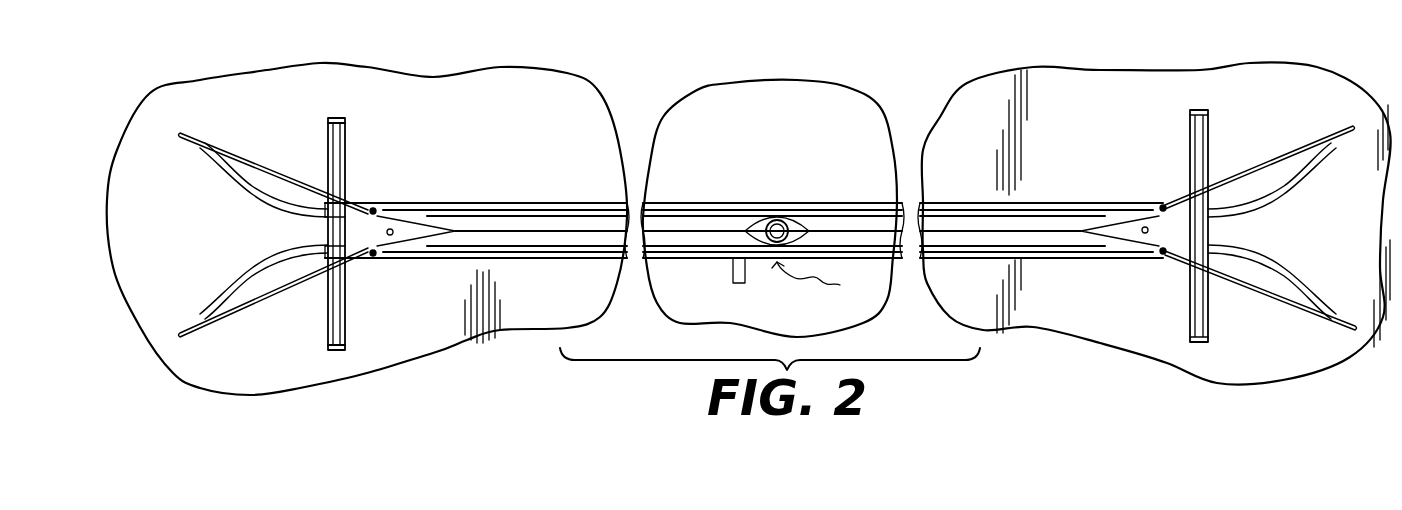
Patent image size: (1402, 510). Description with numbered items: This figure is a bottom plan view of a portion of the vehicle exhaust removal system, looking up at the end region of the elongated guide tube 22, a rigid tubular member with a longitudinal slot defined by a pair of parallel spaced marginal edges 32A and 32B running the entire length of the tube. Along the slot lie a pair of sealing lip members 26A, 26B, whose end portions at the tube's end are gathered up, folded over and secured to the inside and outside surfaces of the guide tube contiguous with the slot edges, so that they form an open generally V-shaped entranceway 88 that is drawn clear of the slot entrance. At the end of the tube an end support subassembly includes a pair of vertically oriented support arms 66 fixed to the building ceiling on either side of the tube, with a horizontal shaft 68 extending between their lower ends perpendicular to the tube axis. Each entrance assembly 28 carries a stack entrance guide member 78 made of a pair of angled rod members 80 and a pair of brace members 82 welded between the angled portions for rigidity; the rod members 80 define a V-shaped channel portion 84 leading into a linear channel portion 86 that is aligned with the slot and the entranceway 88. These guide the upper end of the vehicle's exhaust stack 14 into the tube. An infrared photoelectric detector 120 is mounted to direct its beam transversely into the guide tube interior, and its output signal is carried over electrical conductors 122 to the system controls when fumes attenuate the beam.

The exhaust stack 14 is at (781, 220).
The guide tube 22 is at (471, 204).
The sealing lip member 26A is at (533, 241).
The sealing lip member 26B is at (530, 220).
The entrance assembly 28 is at (302, 233).
The marginal edge 32A is at (658, 259).
The marginal edge 32B is at (691, 206).
The support arm 66 is at (340, 118).
The horizontal shaft 68 is at (340, 305).
The stack entrance guide member 78 is at (302, 207).
The angled rod member 80 is at (193, 152).
The brace member 82 is at (243, 160).
The V-shaped channel portion 84 is at (207, 183).
The linear channel portion 86 is at (316, 240).
The V-shaped entranceway 88 is at (398, 229).
The infrared photoelectric detector 120 is at (740, 284).
The electrical conductors 122 is at (828, 288).